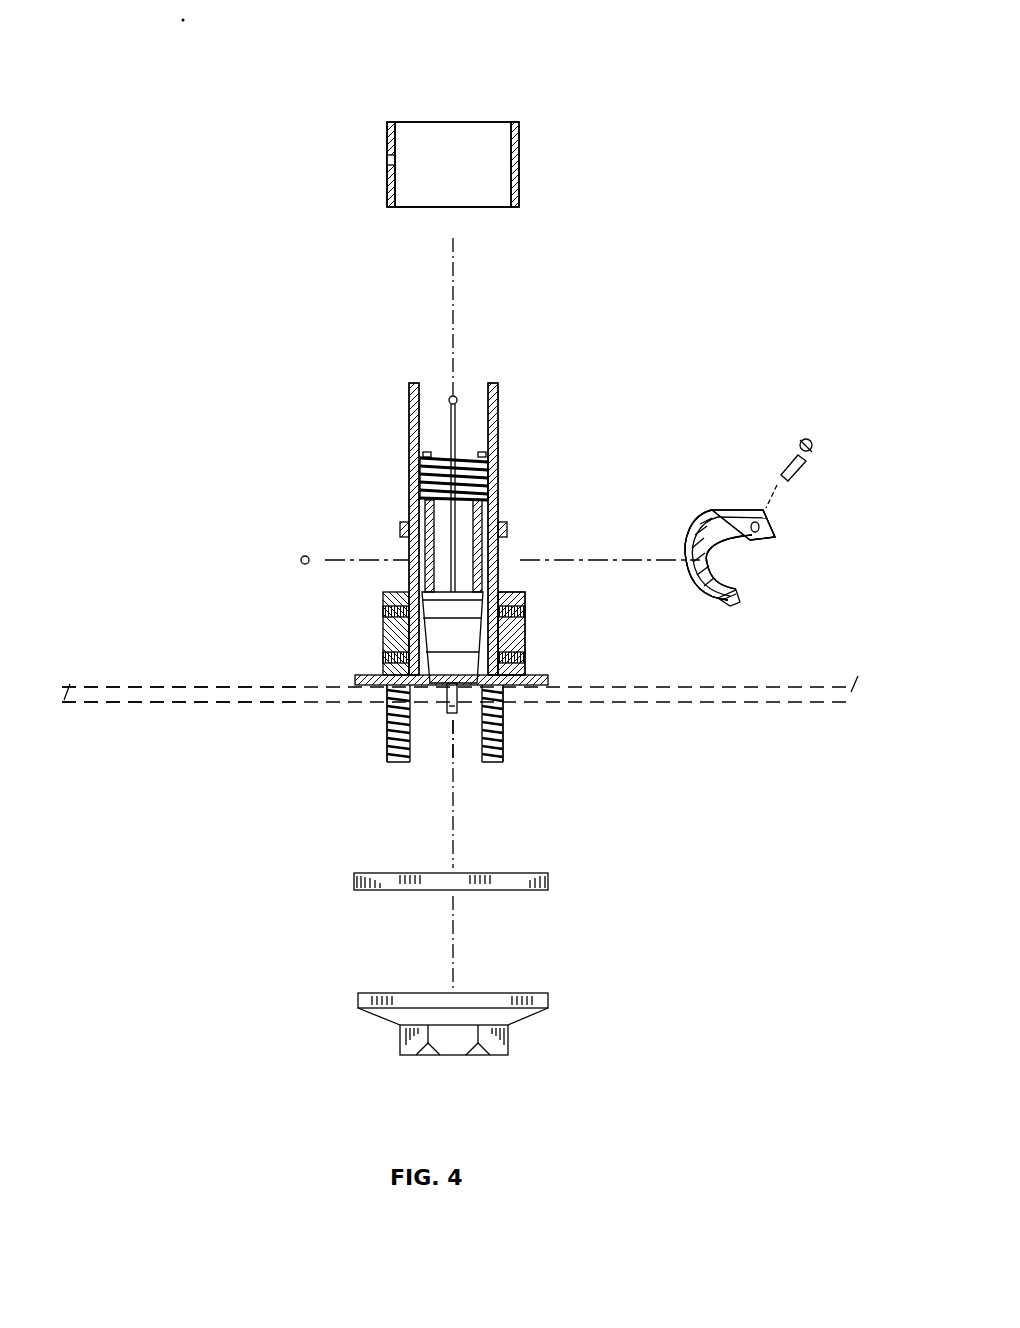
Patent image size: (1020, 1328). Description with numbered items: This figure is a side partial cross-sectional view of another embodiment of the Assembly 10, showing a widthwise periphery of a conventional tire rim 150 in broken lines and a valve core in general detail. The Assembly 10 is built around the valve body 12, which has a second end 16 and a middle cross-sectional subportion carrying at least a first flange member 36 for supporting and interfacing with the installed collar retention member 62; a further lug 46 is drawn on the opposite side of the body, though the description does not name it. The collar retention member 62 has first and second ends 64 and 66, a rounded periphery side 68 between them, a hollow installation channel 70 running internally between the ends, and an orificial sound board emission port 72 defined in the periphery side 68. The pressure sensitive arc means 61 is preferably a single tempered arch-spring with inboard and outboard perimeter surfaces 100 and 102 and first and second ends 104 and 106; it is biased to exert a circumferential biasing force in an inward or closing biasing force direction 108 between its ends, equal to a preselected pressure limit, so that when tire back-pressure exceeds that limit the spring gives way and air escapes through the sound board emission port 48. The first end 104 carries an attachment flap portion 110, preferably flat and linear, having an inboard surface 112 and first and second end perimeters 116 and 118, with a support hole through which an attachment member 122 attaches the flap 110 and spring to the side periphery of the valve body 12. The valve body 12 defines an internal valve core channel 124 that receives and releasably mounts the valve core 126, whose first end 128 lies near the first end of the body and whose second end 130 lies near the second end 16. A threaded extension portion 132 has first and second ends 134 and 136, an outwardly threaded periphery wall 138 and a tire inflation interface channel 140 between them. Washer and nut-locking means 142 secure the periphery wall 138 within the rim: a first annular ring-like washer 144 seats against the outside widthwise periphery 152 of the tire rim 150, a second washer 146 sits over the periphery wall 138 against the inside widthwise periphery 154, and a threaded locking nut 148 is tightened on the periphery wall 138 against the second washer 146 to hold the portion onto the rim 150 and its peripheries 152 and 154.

The Assembly 10 is at (322, 515).
The valve body 12 is at (555, 452).
The second end 16 is at (523, 660).
The first flange member 36 is at (508, 529).
The left lug 46 is at (407, 556).
The sound board emission port 48 is at (407, 561).
The pressure sensitive arc means 61 is at (655, 586).
The collar retention member 62 is at (560, 142).
The first end 64 is at (472, 122).
The second end 66 is at (408, 207).
The rounded periphery side 68 is at (516, 175).
The hollow installation channel 70 is at (440, 130).
The orificial sound board emission port 72 is at (386, 160).
The inboard perimeter surface 100 is at (690, 543).
The outboard perimeter surface 102 is at (712, 597).
The first end 104 is at (708, 517).
The second end 106 is at (738, 600).
The inward or closing biasing force direction 108 is at (746, 562).
The attachment flap portion 110 is at (764, 475).
The inboard surface 112 is at (773, 538).
The first end perimeter 116 is at (768, 522).
The second end perimeter 118 is at (747, 540).
The attachment member 122 is at (812, 441).
The internal valve core channel 124 is at (429, 378).
The valve core 126 is at (461, 400).
The first end 128 is at (452, 397).
The second end 130 is at (453, 715).
The threaded extension portion 132 is at (350, 742).
The first end 134 is at (498, 697).
The second end 136 is at (486, 760).
The periphery wall 138 is at (413, 728).
The tire inflation interface channel 140 is at (474, 785).
The washer and nut-locking means 142 is at (322, 645).
The first annular ring-like washer 144 is at (540, 682).
The second annular ring-like washer 146 is at (548, 880).
The threaded locking nut 148 is at (505, 1012).
The tire rim 150 is at (155, 680).
The outside widthwise periphery 152 is at (128, 686).
The inside widthwise periphery 154 is at (140, 704).